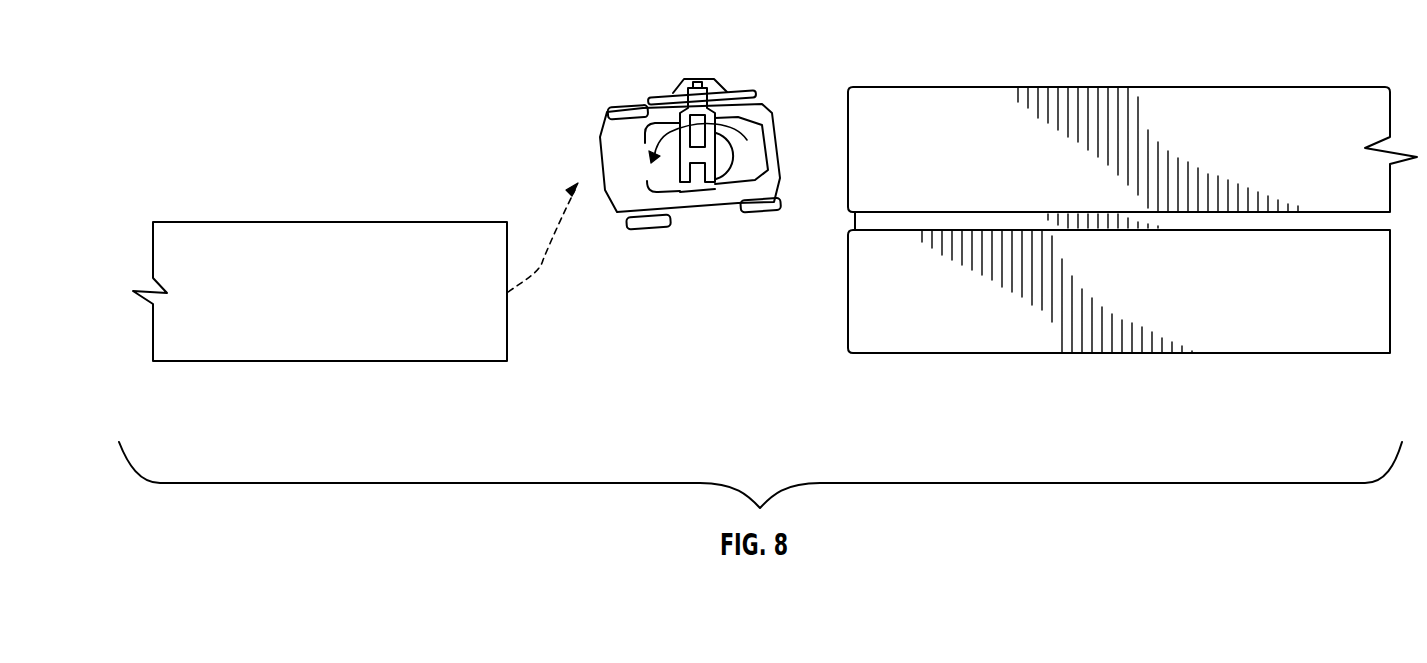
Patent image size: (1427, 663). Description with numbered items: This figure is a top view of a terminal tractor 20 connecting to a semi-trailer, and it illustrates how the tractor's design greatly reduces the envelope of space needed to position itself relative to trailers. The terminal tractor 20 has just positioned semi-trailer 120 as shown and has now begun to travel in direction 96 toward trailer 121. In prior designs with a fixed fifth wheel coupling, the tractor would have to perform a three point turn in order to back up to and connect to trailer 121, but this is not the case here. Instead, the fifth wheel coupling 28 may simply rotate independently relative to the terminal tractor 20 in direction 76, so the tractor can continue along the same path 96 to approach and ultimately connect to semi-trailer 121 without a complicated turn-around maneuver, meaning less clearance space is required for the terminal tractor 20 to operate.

The terminal tractor 20 is at (750, 63).
The fifth wheel coupling 28 is at (717, 183).
The direction 76 is at (745, 148).
The direction 96 is at (543, 260).
The semi-trailer 120 is at (288, 254).
The trailer 121 is at (932, 154).